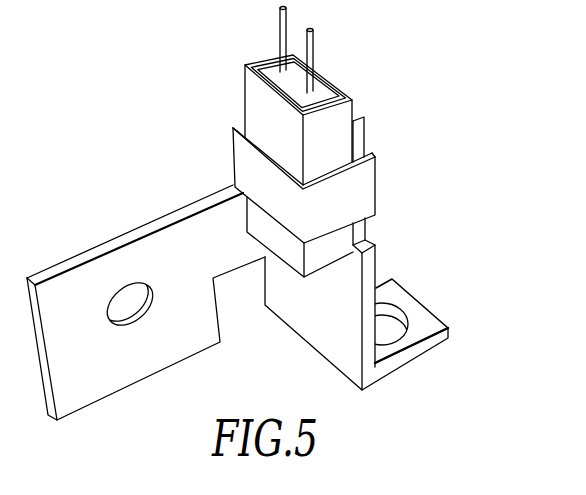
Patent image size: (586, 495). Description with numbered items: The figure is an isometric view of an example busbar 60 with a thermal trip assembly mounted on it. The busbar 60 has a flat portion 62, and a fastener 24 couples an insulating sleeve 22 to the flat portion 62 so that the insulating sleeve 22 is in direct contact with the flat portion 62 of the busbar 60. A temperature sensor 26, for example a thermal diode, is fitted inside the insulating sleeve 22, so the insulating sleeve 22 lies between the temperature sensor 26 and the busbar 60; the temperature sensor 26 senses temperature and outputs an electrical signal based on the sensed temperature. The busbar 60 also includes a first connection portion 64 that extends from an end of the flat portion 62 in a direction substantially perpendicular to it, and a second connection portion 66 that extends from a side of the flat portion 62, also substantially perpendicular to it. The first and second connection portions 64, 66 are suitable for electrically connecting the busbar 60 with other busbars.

The insulating sleeve 22 is at (340, 117).
The fastener 24 is at (365, 187).
The temperature sensor 26 is at (279, 70).
The busbar 60 is at (261, 293).
The flat portion 62 is at (297, 304).
The first connection portion 64 is at (428, 331).
The second connection portion 66 is at (70, 382).